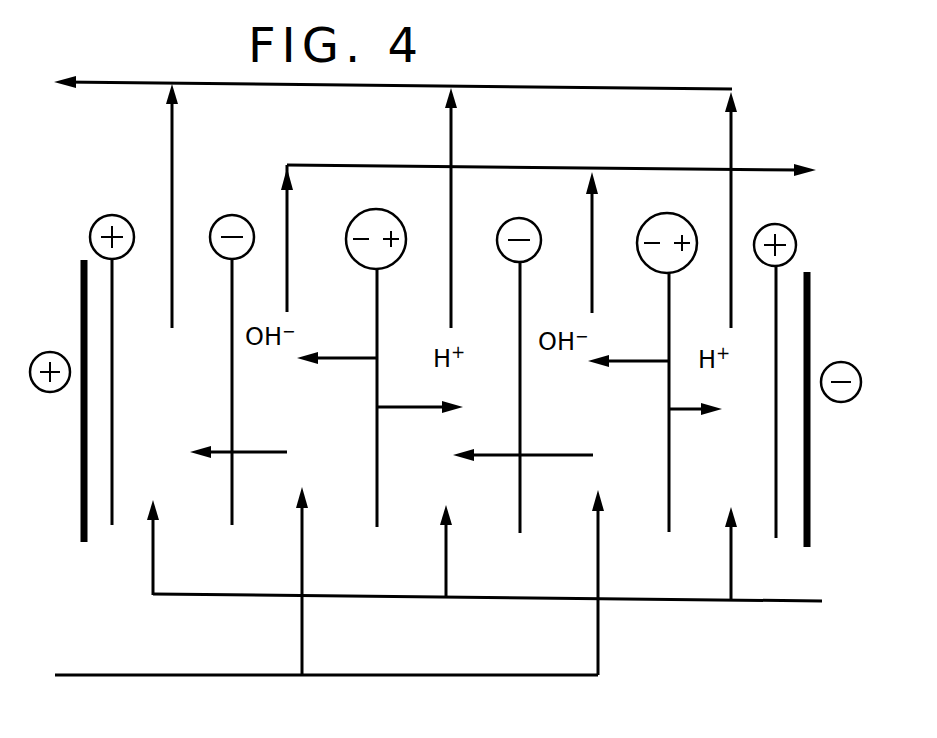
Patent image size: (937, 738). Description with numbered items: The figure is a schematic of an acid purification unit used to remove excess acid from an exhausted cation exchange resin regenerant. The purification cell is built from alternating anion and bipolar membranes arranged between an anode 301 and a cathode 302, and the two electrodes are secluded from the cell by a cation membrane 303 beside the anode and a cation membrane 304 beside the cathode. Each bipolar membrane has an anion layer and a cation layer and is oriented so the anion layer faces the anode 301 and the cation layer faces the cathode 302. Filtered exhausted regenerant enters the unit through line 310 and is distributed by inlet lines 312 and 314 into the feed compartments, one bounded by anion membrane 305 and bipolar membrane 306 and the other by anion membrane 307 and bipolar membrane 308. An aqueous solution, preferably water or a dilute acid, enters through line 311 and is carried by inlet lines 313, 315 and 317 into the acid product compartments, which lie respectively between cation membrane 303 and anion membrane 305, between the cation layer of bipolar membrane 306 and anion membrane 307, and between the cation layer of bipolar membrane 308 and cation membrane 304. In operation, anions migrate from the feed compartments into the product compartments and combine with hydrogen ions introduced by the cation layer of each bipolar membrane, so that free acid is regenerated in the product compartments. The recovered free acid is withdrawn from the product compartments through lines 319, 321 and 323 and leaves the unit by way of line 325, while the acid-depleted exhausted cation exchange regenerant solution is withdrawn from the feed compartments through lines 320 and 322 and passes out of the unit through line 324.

The anode 301 is at (80, 350).
The cathode 302 is at (810, 357).
The cation membrane 303 is at (113, 332).
The cation membrane 304 is at (778, 290).
The anion membrane 305 is at (231, 300).
The bipolar membrane 306 is at (376, 301).
The anion membrane 307 is at (518, 318).
The bipolar membrane 308 is at (667, 326).
The line 310 is at (108, 668).
The line 311 is at (770, 600).
The inlet line 312 is at (302, 612).
The inlet line 313 is at (153, 545).
The inlet line 314 is at (598, 620).
The inlet line 315 is at (446, 545).
The inlet line 317 is at (730, 548).
The line 319 is at (172, 128).
The line 320 is at (286, 198).
The line 321 is at (454, 136).
The line 322 is at (592, 208).
The line 323 is at (731, 127).
The line 324 is at (766, 168).
The line 325 is at (130, 84).